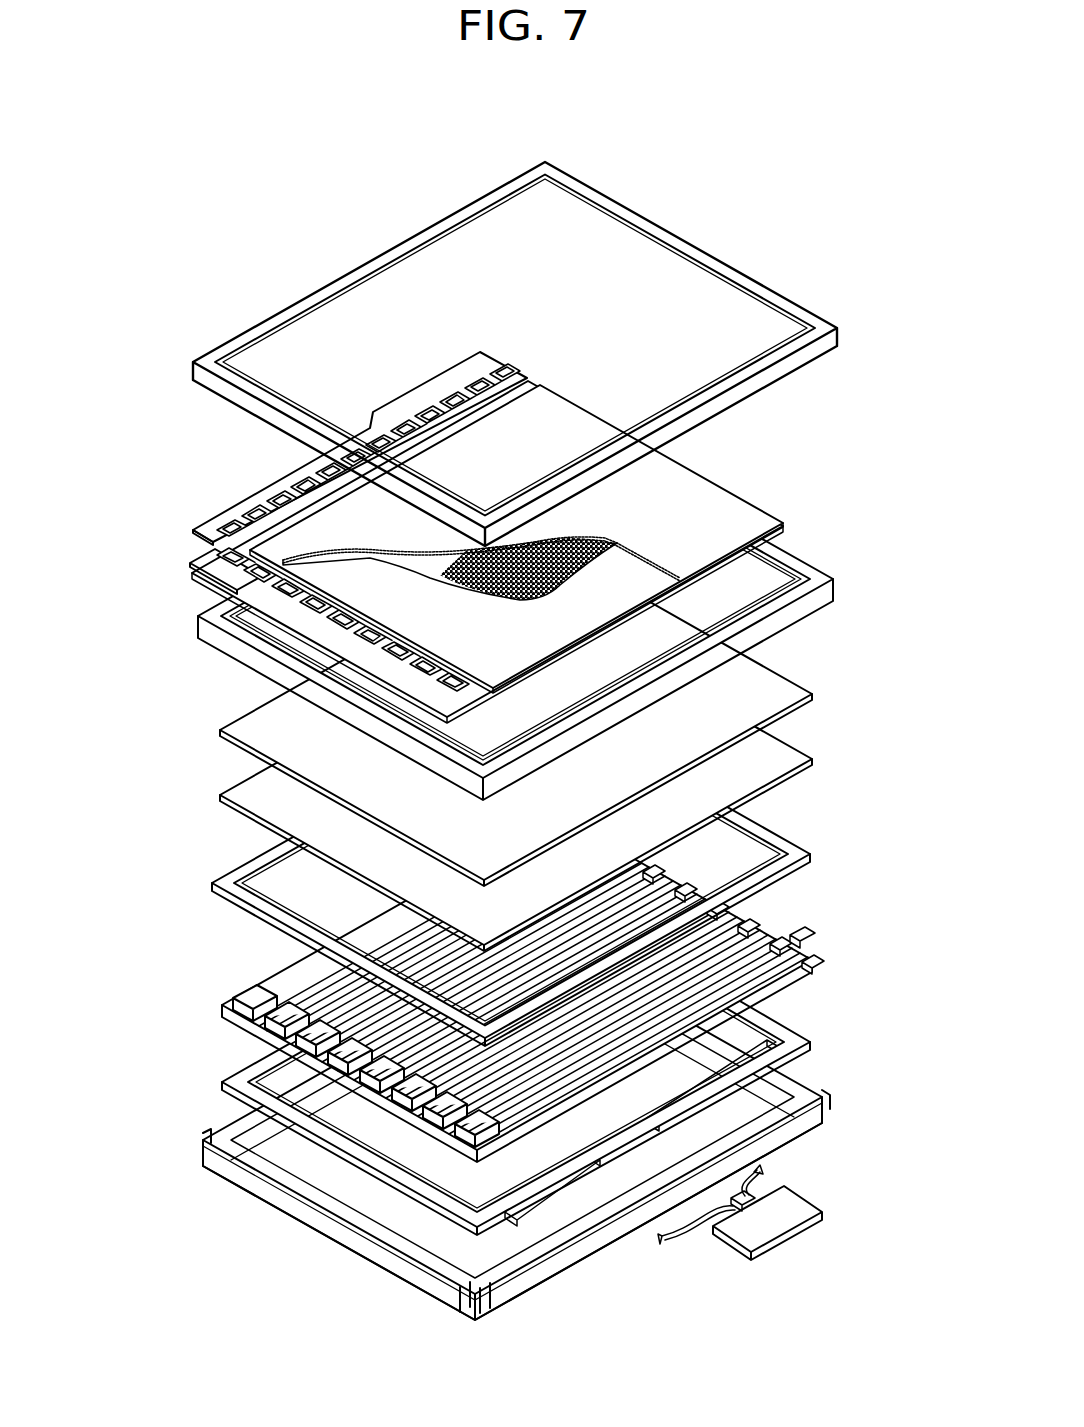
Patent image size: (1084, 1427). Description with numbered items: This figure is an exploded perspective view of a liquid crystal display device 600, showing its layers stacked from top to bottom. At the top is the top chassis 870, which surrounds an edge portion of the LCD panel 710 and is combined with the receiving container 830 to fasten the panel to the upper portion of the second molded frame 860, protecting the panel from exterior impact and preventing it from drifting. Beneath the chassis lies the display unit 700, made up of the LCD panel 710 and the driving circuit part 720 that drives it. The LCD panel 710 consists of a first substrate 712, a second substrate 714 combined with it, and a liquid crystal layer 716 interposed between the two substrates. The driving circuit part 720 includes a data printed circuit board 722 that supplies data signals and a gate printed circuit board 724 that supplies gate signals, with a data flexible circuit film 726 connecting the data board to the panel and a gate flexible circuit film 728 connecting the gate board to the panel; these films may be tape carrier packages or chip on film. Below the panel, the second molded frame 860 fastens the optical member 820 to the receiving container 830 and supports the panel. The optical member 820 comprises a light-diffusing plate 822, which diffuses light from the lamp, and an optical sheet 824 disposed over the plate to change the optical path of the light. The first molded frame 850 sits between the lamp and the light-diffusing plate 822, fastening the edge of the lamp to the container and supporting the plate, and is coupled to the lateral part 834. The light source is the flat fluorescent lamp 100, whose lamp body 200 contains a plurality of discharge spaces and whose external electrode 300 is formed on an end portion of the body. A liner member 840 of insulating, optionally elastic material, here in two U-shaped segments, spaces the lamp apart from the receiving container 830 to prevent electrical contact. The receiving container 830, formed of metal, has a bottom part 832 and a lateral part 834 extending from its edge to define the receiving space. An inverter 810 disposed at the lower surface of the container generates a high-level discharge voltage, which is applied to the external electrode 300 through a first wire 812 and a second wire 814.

The liquid crystal display device 600 is at (391, 215).
The top chassis 870 is at (247, 318).
The display unit 700 is at (233, 492).
The LCD panel 710 is at (535, 552).
The first substrate 712 is at (568, 628).
The second substrate 714 is at (697, 558).
The liquid crystal layer 716 is at (590, 553).
The driving circuit part 720 is at (309, 500).
The data printed circuit board 722 is at (387, 410).
The gate printed circuit board 724 is at (235, 575).
The data flexible circuit film 726 is at (440, 407).
The gate flexible circuit film 728 is at (255, 600).
The second molded frame 860 is at (830, 600).
The optical member 820 is at (477, 747).
The light-diffusing plate 822 is at (234, 792).
The optical sheet 824 is at (234, 730).
The first molded frame 850 is at (232, 866).
The flat fluorescent lamp 100 is at (503, 988).
The lamp body 200 is at (753, 930).
The external electrode 300 is at (795, 932).
The liner member 840 is at (232, 1067).
The receiving container 830 is at (488, 1131).
The bottom part 832 is at (317, 1173).
The lateral part 834 is at (333, 1212).
The inverter 810 is at (757, 1228).
The first wire 812 is at (673, 1237).
The second wire 814 is at (766, 1171).